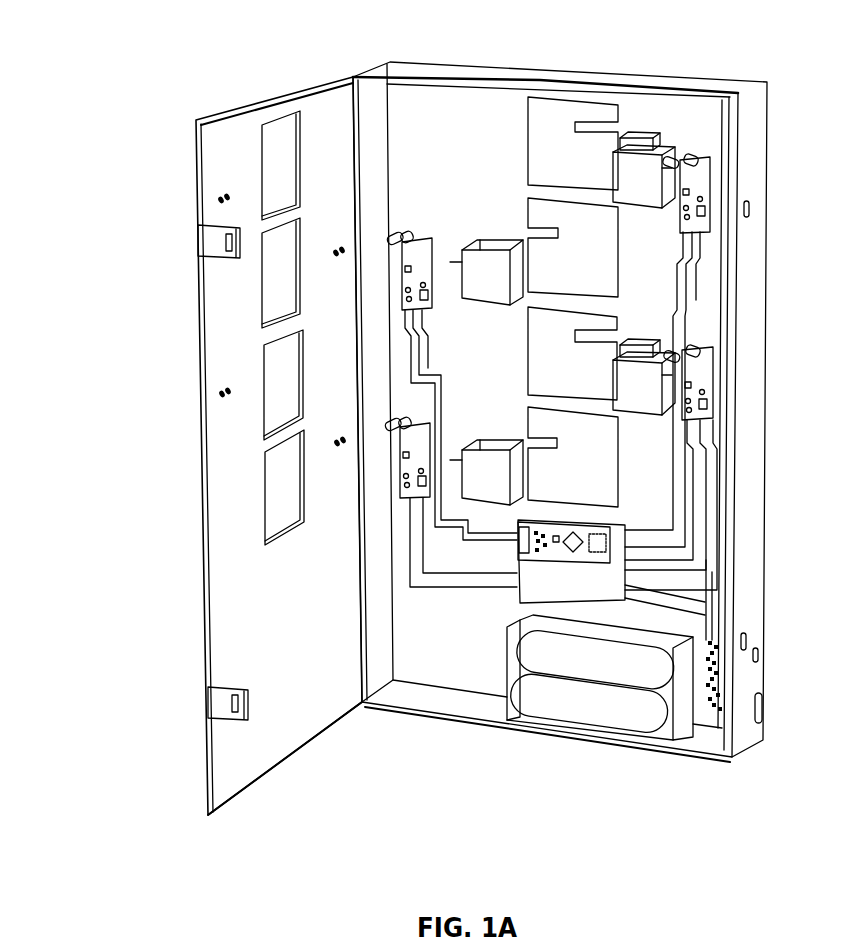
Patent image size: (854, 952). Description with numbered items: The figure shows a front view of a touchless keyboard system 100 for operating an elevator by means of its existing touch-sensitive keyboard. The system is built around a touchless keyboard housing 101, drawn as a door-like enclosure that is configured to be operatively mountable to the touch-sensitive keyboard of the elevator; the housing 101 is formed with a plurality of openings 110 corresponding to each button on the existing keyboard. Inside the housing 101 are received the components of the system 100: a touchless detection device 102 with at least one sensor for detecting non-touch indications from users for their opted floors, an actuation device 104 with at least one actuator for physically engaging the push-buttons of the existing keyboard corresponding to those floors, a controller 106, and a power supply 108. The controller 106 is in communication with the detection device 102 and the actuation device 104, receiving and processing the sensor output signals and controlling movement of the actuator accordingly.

The touchless keyboard system 100 is at (599, 883).
The touchless keyboard housing 101 is at (222, 135).
The touchless detection device 102 is at (392, 243).
The actuation device 104 is at (482, 478).
The controller 106 is at (610, 600).
The power supply 108 is at (610, 707).
The openings 110 is at (280, 183).